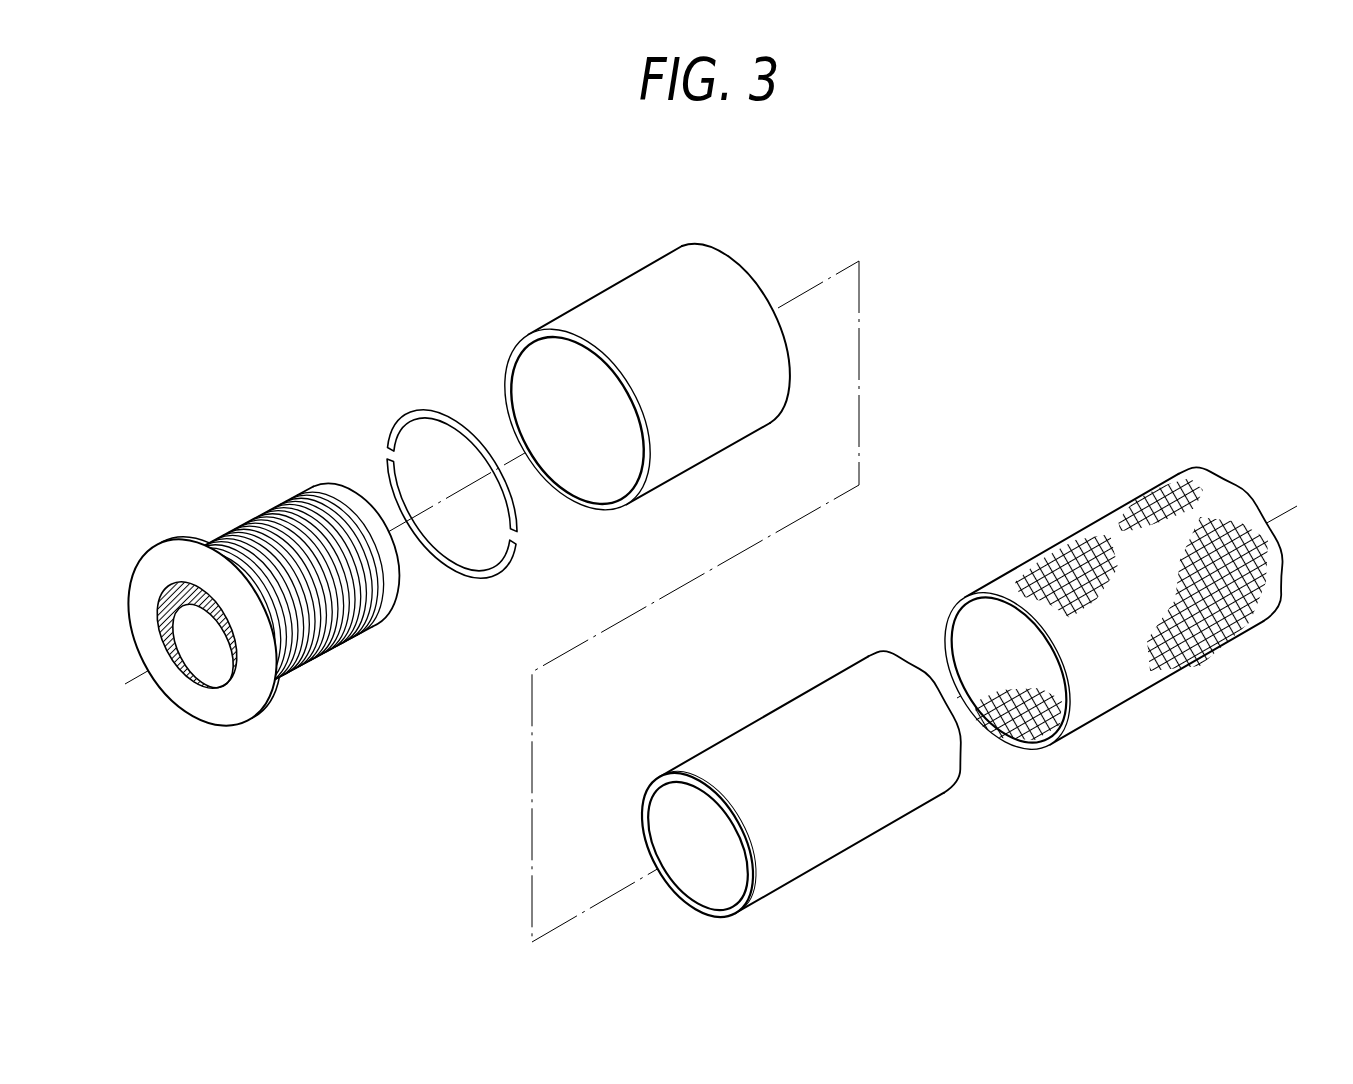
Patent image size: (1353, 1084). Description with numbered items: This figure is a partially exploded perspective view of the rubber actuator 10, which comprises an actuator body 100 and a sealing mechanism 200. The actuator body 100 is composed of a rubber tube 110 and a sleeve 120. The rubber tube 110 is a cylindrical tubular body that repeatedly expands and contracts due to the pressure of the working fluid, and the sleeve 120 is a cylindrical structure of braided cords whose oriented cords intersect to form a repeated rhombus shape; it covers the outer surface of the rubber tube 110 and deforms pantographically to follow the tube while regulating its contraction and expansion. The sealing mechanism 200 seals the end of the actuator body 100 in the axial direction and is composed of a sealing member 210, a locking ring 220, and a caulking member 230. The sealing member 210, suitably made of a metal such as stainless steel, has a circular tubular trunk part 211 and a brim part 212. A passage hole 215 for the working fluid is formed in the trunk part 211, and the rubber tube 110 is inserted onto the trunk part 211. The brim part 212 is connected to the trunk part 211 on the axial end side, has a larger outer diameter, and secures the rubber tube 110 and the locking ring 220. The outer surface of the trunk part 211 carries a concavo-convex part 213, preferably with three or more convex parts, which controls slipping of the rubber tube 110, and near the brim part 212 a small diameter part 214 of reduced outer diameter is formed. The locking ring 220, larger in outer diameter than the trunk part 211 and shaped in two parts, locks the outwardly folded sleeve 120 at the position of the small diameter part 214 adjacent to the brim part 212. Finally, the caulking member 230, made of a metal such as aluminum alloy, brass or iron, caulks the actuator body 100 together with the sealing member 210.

The rubber actuator 10 is at (1084, 269).
The actuator body 100 is at (1220, 752).
The rubber tube 110 is at (862, 845).
The sleeve 120 is at (1132, 704).
The sealing mechanism 200 is at (598, 176).
The sealing member 210 is at (294, 612).
The trunk part 211 is at (336, 563).
The brim part 212 is at (237, 707).
The concavo-convex part 213 is at (258, 512).
The small diameter part 214 is at (307, 663).
The passage hole 215 is at (187, 677).
The locking ring 220 is at (432, 414).
The caulking member 230 is at (599, 306).